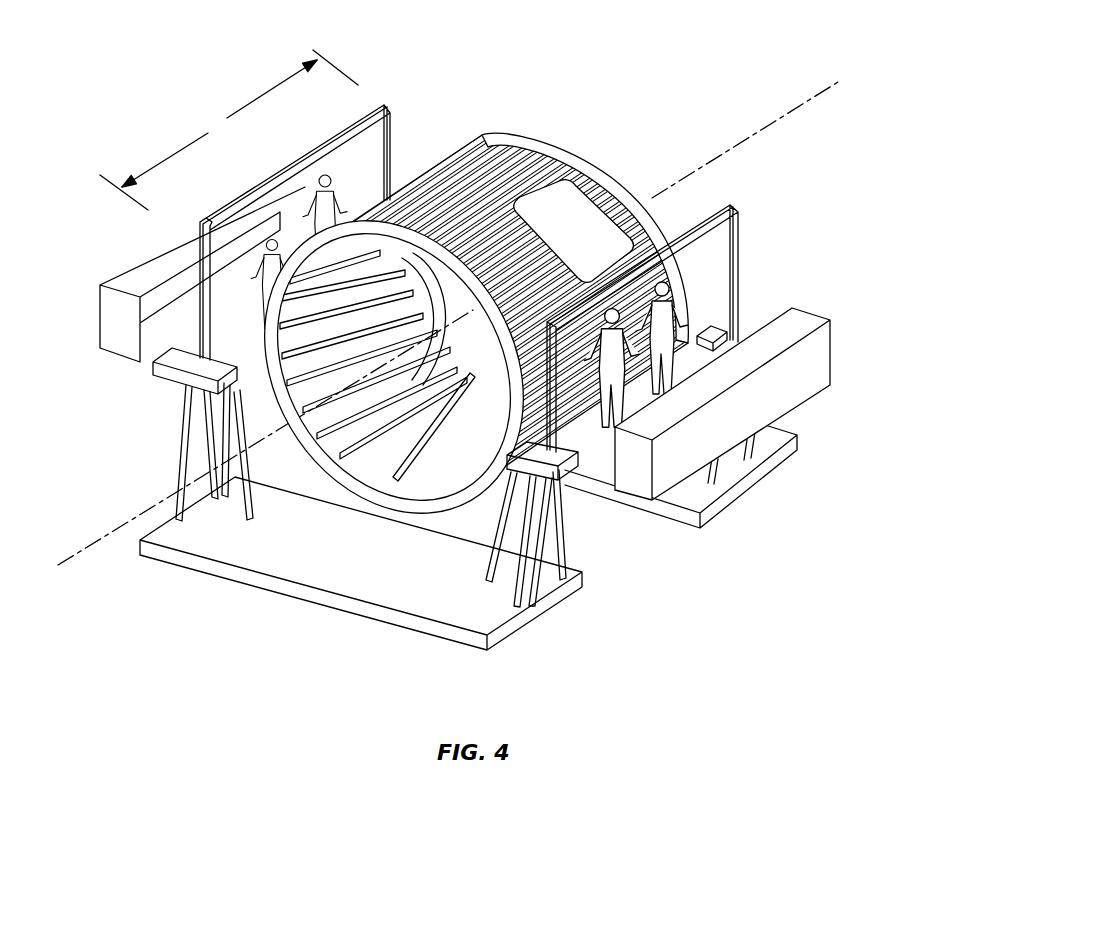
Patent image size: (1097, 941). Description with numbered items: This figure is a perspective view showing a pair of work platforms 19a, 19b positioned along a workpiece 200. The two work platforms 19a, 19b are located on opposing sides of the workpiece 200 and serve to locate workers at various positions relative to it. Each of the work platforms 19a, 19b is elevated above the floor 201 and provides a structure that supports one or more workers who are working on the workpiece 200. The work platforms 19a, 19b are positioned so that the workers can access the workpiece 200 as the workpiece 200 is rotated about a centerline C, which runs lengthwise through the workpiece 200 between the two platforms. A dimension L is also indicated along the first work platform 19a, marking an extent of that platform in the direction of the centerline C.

The work platform 19a is at (282, 150).
The work platform 19b is at (838, 298).
The workpiece 200 is at (567, 153).
The floor 201 is at (670, 621).
The centerline C is at (770, 125).
The length of scaffold L is at (229, 130).